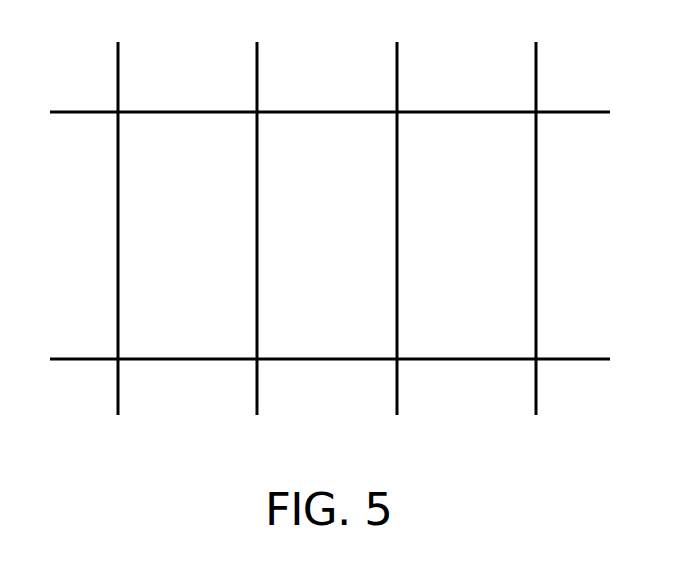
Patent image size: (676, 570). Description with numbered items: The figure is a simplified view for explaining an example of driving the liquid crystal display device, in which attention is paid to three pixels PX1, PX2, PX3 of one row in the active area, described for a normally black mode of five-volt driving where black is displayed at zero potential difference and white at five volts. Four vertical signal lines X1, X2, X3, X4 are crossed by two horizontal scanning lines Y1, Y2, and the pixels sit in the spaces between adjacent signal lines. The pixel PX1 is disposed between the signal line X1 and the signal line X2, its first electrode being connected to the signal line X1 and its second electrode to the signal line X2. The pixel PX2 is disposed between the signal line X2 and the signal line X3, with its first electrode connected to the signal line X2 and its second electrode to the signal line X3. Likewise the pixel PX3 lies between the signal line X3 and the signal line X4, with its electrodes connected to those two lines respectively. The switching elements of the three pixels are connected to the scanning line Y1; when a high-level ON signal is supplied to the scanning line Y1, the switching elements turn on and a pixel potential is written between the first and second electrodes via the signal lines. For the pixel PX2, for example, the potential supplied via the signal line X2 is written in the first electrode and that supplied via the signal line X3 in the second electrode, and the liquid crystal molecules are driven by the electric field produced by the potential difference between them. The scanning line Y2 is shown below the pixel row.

The signal line X1 is at (118, 398).
The signal line X2 is at (257, 398).
The signal line X3 is at (397, 398).
The signal line X4 is at (536, 398).
The scanning line Y1 is at (63, 113).
The scanning line Y2 is at (63, 360).
The pixel PX1 is at (187, 235).
The pixel PX2 is at (327, 235).
The pixel PX3 is at (466, 235).